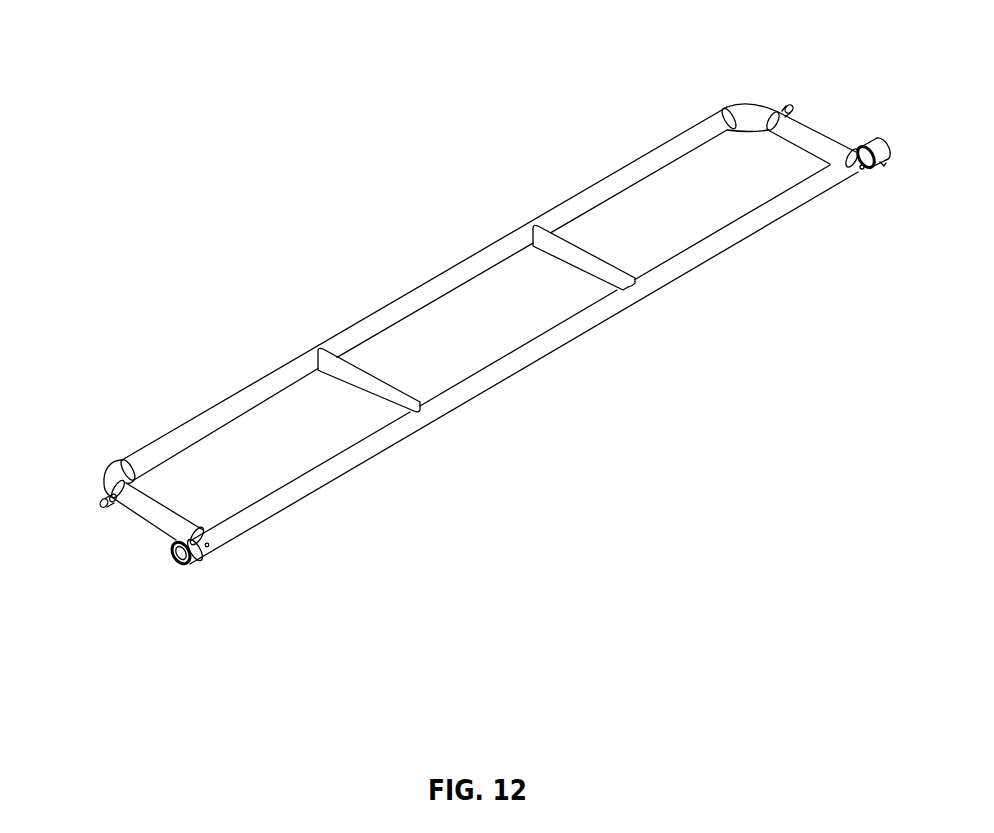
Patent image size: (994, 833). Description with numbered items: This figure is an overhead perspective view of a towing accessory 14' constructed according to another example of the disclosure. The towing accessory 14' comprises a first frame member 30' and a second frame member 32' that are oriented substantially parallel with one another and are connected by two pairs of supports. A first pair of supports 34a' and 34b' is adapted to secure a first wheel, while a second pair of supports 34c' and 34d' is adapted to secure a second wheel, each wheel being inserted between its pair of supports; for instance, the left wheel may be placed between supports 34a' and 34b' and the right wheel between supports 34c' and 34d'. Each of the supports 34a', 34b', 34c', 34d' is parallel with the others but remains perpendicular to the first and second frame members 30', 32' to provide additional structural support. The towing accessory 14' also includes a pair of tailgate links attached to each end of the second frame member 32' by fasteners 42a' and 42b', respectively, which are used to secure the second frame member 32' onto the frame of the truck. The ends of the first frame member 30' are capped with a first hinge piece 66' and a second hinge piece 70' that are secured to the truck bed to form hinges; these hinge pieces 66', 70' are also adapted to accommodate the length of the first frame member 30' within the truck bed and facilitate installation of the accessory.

The towing accessory 14' is at (474, 319).
The first frame member 30' is at (521, 364).
The second frame member 32' is at (441, 300).
The support 34a' is at (153, 526).
The support 34b' is at (391, 376).
The support 34c' is at (596, 250).
The support 34d' is at (817, 121).
The fastener 42a' is at (69, 507).
The fastener 42b' is at (795, 83).
The first hinge piece 66' is at (199, 582).
The second hinge piece 70' is at (891, 121).